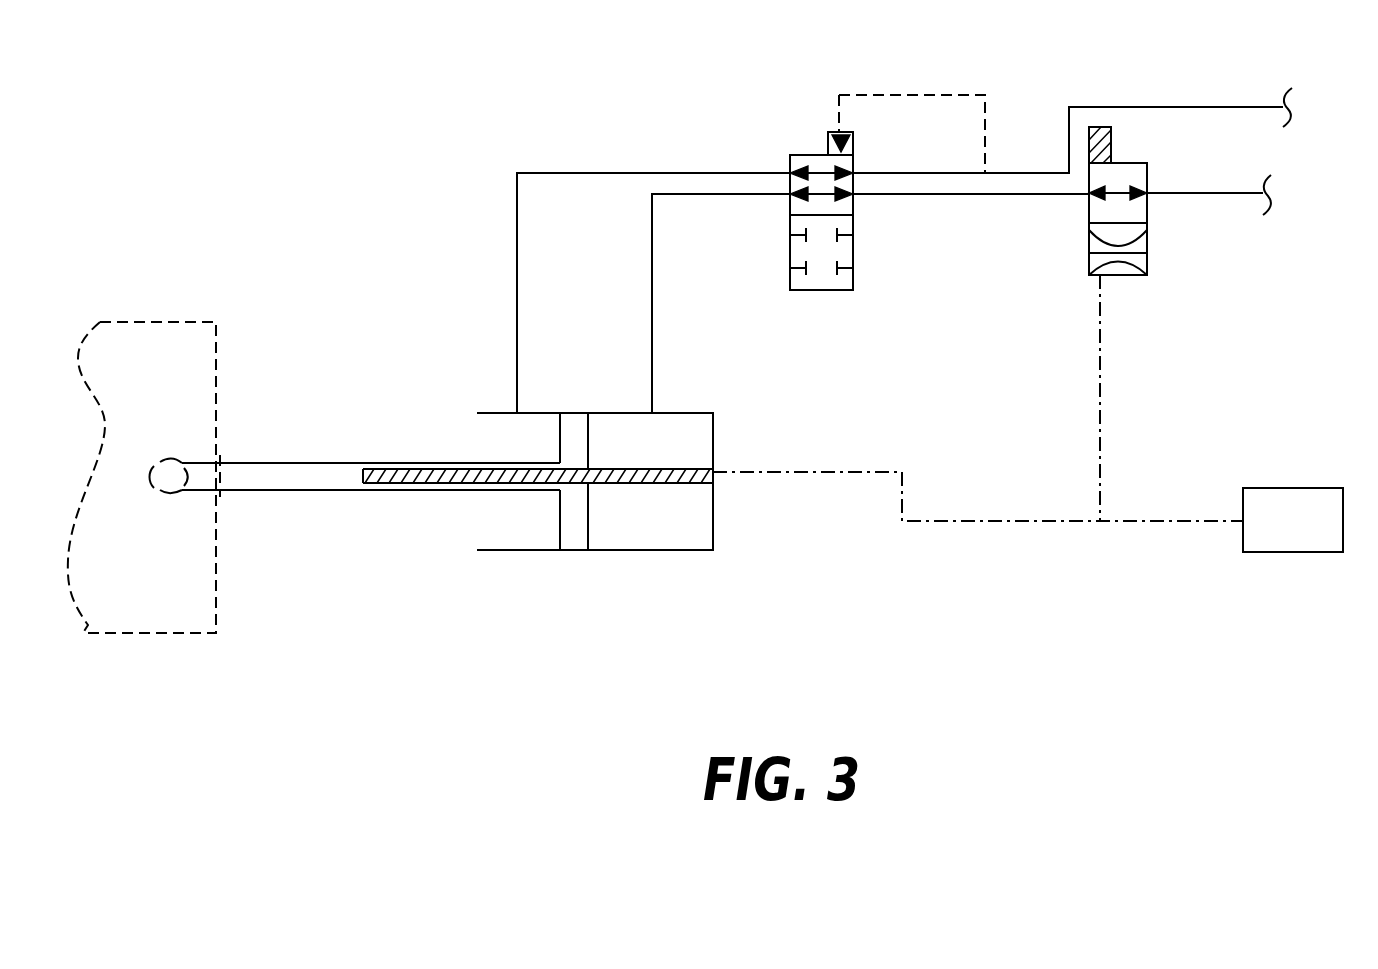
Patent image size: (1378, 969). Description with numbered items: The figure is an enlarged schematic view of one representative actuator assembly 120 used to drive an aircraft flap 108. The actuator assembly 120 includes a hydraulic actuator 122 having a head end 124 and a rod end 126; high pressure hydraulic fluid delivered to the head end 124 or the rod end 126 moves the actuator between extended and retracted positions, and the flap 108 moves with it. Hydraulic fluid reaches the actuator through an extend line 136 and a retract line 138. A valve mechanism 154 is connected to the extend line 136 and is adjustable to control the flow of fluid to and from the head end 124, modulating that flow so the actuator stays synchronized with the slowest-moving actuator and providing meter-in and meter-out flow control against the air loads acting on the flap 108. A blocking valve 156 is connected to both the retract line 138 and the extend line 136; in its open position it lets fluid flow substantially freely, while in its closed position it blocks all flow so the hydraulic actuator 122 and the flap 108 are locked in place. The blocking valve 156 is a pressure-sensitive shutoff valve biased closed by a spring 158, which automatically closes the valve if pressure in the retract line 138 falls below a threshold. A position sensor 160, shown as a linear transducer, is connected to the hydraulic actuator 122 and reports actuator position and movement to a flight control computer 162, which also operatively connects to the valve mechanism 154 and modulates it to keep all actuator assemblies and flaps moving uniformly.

The flap 108 is at (140, 634).
The actuator assembly 120 is at (280, 190).
The hydraulic actuator 122 is at (572, 552).
The head end 124 is at (642, 528).
The rod end 126 is at (518, 530).
The extend line 136 is at (1195, 195).
The retract line 138 is at (1175, 107).
The valve mechanism 154 is at (1118, 278).
The blocking valve 156 is at (848, 292).
The spring 158 is at (795, 292).
The position sensor 160 is at (700, 484).
The flight control computer 162 is at (1295, 553).